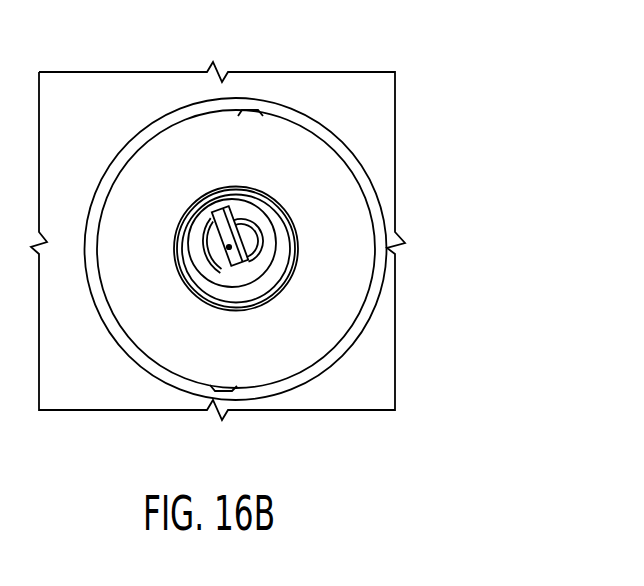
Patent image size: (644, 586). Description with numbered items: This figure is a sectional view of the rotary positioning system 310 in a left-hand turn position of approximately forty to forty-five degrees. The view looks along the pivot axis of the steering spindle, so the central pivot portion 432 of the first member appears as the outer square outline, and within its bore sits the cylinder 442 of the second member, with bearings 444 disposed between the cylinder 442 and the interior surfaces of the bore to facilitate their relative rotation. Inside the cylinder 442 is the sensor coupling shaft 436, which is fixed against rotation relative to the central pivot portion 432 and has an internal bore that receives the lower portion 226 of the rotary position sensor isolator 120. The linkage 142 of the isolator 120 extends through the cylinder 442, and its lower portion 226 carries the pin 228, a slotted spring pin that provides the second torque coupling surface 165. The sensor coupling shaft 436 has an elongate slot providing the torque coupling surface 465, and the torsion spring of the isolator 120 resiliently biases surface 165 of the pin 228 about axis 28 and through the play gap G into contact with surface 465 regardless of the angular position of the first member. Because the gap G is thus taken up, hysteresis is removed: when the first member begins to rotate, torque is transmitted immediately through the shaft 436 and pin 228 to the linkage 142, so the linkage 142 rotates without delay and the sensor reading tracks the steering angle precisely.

The rotary positioning system 310 is at (133, 80).
The central pivot portion 432 is at (380, 137).
The bearings 444 is at (218, 110).
The cylinder 442 is at (132, 328).
The torque coupling surface 465 is at (223, 210).
The gap G is at (202, 205).
The second torque coupling surface 165 is at (236, 212).
The sensor coupling shaft 436 is at (243, 232).
The pin 228 is at (258, 234).
The linkage 142 is at (271, 255).
The axis 28 is at (253, 272).
The lower portion 226 is at (217, 268).
The rotary position sensor isolator 120 is at (228, 284).